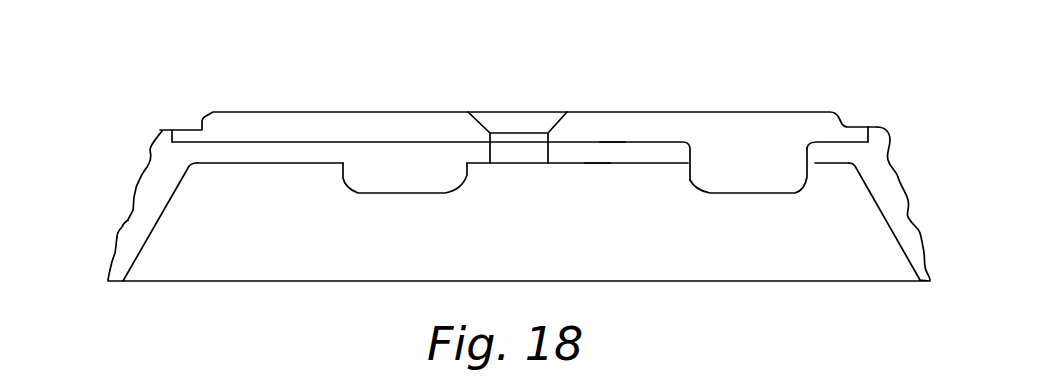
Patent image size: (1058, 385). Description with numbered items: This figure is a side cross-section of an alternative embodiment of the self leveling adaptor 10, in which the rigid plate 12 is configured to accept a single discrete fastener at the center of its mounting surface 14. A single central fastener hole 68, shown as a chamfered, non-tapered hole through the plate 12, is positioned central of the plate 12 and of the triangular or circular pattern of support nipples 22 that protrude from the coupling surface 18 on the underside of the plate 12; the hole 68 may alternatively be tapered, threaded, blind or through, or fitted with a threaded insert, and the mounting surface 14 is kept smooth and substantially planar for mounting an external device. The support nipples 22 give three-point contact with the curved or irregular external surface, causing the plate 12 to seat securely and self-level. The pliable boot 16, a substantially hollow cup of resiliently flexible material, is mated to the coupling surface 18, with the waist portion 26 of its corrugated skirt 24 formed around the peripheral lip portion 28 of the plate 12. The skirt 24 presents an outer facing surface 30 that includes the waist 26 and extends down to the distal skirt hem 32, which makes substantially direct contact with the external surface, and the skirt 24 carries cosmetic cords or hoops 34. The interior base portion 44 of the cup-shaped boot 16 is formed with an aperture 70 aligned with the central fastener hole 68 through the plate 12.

The self leveling adaptor 10 is at (229, 69).
The plate 12 is at (390, 132).
The mounting surface 14 is at (355, 113).
The pliable boot 16 is at (153, 202).
The coupling surface 18 is at (597, 145).
The support nipples 22 is at (348, 183).
The skirt 24 is at (132, 208).
The waist portion 26 is at (157, 132).
The peripheral lip portion 28 is at (187, 133).
The outer facing surface 30 is at (132, 218).
The skirt hem 32 is at (110, 280).
The cords or hoops 34 is at (138, 183).
The interior base portion 44 is at (612, 143).
The central fastener hole 68 is at (535, 112).
The aperture 70 is at (513, 164).